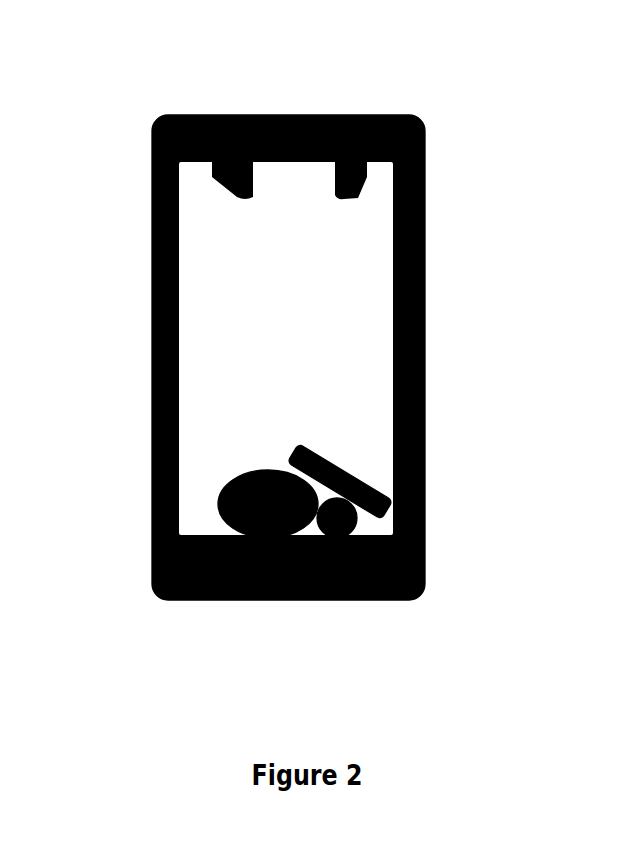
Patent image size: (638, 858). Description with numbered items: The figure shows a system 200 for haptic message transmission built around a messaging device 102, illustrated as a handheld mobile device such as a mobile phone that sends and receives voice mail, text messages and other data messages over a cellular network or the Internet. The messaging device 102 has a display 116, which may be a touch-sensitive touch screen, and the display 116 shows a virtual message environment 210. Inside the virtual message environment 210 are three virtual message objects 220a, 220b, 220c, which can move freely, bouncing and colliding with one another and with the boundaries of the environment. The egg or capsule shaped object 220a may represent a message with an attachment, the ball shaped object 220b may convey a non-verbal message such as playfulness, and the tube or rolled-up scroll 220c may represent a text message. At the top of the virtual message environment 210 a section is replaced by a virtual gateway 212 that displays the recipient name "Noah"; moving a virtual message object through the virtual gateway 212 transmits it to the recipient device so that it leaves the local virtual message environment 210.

The system for haptic message transmission 200 is at (295, 26).
The messaging device 102 is at (163, 120).
The display 116 is at (163, 175).
The virtual gateway 212 is at (347, 175).
The virtual message environment 210 is at (255, 328).
The virtual message object 220a is at (252, 505).
The virtual message object 220b is at (345, 523).
The virtual message object 220c is at (380, 510).